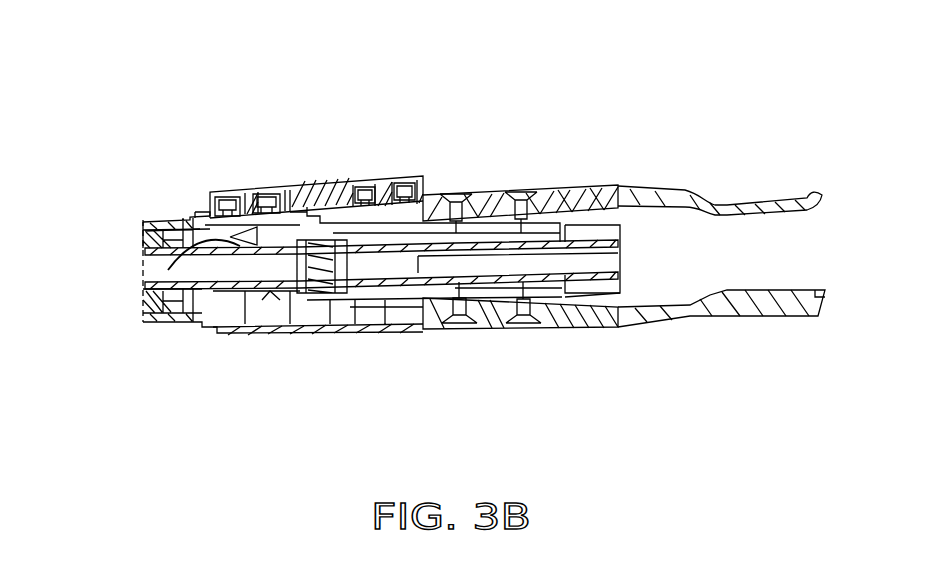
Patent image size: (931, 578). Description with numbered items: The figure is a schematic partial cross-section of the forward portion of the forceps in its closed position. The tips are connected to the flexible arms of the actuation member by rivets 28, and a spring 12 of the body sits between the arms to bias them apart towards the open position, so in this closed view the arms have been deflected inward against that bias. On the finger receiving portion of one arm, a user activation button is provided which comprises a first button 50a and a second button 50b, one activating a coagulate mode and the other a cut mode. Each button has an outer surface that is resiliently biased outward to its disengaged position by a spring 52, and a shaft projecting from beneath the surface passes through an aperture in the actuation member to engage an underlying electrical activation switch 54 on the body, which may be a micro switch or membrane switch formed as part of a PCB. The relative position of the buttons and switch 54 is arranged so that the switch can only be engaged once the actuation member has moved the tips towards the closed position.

The spring 12 is at (303, 283).
The rivets 28 is at (527, 193).
The first button 50a is at (258, 190).
The second button 50b is at (387, 177).
The spring 52 is at (207, 212).
The electrical activation switch 54 is at (143, 230).